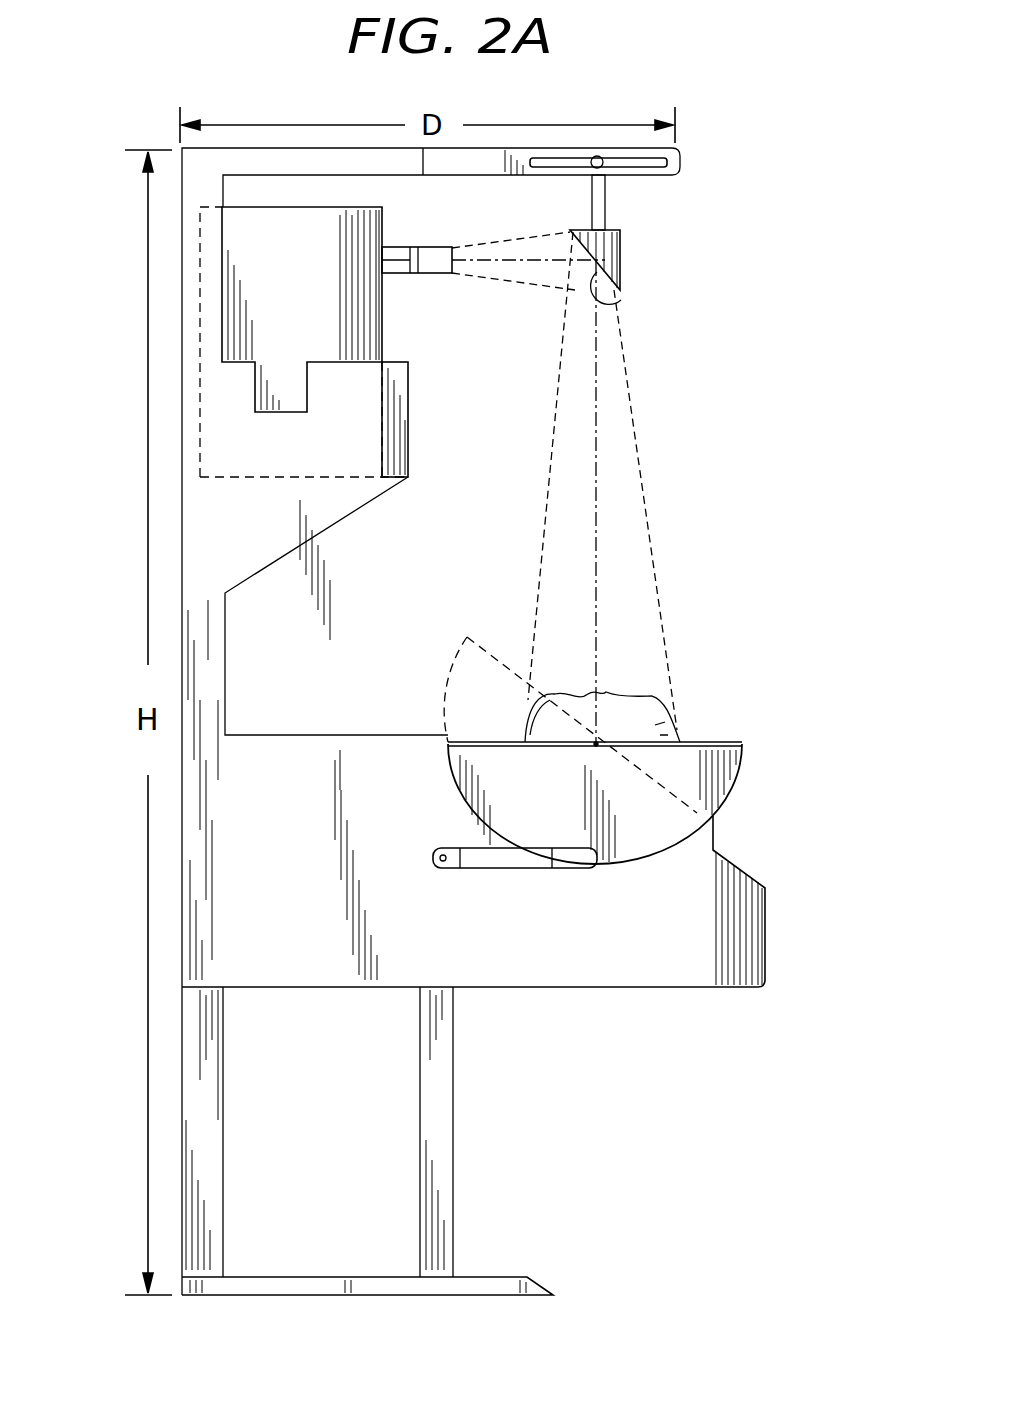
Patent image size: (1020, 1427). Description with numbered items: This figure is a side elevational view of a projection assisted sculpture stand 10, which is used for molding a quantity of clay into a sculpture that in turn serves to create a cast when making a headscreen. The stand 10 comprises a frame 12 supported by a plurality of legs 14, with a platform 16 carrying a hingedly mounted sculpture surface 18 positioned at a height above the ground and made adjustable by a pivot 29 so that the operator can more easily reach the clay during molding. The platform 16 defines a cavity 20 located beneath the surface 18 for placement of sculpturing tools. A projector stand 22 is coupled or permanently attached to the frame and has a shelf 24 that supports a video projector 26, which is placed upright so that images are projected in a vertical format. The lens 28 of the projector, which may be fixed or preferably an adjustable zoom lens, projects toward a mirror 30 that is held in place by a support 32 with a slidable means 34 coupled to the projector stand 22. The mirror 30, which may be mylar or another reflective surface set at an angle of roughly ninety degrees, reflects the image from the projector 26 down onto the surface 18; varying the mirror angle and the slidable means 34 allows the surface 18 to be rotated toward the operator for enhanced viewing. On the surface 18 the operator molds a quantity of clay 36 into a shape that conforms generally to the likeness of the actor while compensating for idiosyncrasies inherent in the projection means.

The projection assisted sculpture stand 10 is at (217, 858).
The frame 12 is at (503, 975).
The legs 14 is at (423, 1178).
The platform 16 is at (363, 735).
The sculpture surface 18 is at (742, 737).
The cavity 20 is at (747, 972).
The projector stand 22 is at (278, 515).
The shelf 24 is at (397, 468).
The video projector 26 is at (232, 295).
The lens 28 is at (443, 247).
The pivot 29 is at (595, 748).
The mirror 30 is at (622, 298).
The support 32 is at (607, 210).
The slidable means 34 is at (655, 176).
The clay 36 is at (660, 700).